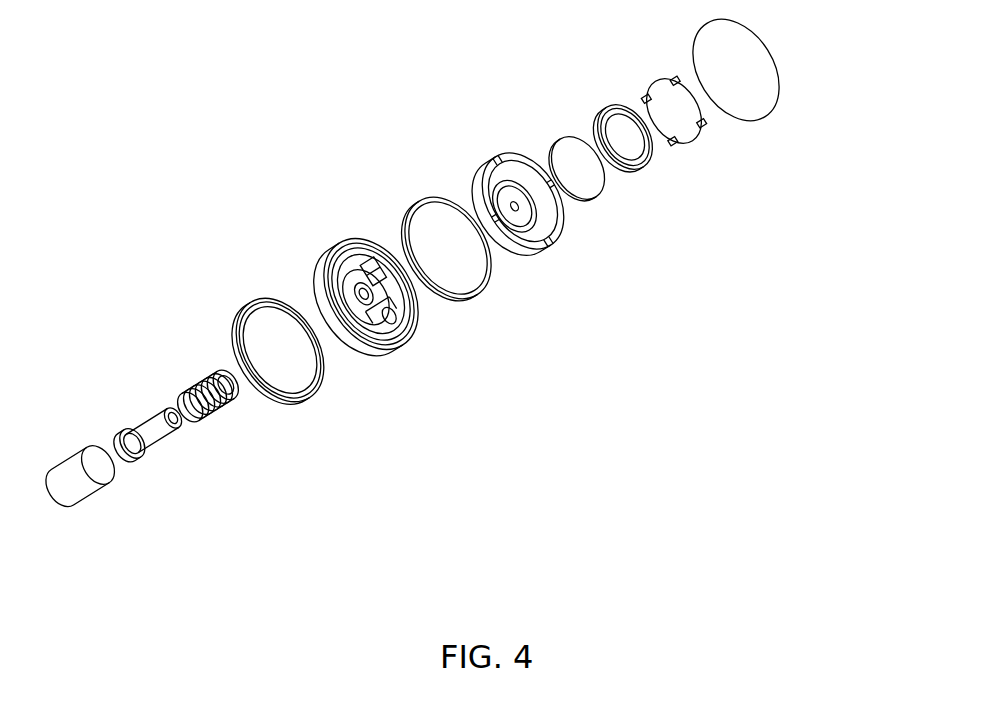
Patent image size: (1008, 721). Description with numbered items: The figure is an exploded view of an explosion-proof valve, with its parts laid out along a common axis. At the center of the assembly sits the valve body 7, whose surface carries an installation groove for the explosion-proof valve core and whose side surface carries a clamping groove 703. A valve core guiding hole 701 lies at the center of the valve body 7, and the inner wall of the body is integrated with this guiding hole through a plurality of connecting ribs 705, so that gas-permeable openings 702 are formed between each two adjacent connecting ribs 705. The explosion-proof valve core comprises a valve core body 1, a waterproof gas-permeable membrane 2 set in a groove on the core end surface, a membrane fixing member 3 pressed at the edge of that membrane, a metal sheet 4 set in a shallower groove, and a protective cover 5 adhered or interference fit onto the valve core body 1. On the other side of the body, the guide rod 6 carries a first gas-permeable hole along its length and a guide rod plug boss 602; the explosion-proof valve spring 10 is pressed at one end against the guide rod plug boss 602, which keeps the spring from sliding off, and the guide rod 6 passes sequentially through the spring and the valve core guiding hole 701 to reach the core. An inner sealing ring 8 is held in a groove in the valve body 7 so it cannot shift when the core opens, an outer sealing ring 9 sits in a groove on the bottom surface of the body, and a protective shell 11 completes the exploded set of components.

The valve core body 1 is at (552, 248).
The waterproof gas-permeable membrane 2 is at (598, 202).
The membrane fixing member 3 is at (652, 165).
The metal sheet 4 is at (697, 133).
The protective cover 5 is at (780, 107).
The guide rod 6 is at (135, 404).
The guide rod plug boss 602 is at (127, 427).
The valve body 7 is at (349, 295).
The valve core guiding hole 701 is at (362, 290).
The gas-permeable opening 702 is at (380, 273).
The clamping groove 703 is at (317, 273).
The connecting rib 705 is at (390, 318).
The inner sealing ring 8 is at (483, 290).
The outer sealing ring 9 is at (317, 403).
The explosion-proof valve spring 10 is at (223, 425).
The protective shell 11 is at (90, 500).